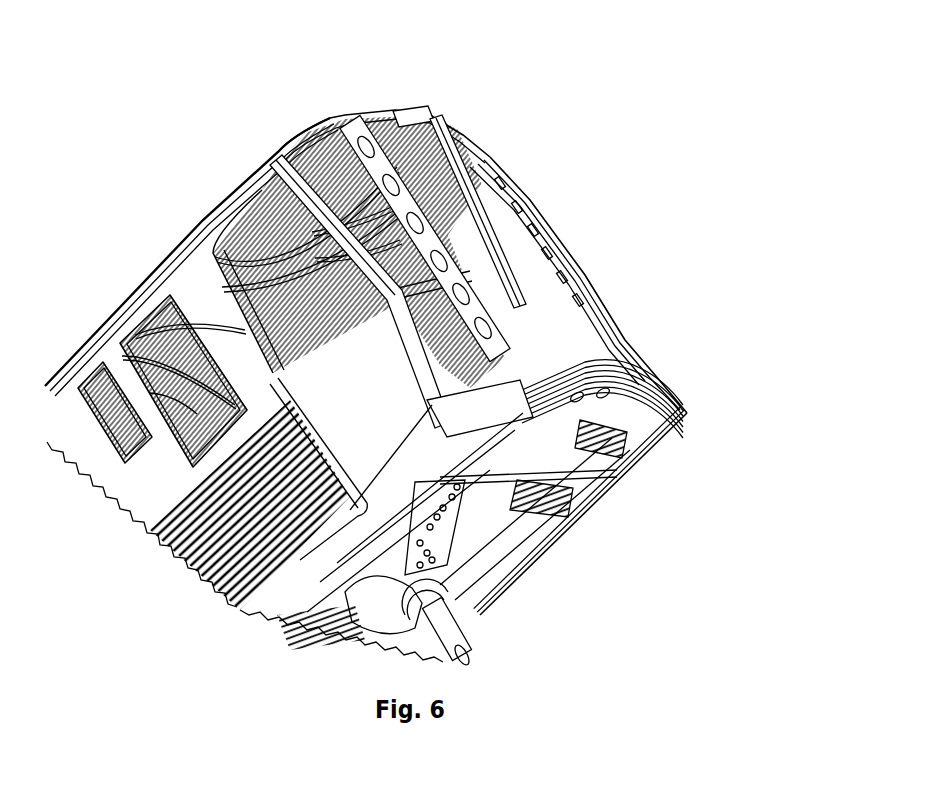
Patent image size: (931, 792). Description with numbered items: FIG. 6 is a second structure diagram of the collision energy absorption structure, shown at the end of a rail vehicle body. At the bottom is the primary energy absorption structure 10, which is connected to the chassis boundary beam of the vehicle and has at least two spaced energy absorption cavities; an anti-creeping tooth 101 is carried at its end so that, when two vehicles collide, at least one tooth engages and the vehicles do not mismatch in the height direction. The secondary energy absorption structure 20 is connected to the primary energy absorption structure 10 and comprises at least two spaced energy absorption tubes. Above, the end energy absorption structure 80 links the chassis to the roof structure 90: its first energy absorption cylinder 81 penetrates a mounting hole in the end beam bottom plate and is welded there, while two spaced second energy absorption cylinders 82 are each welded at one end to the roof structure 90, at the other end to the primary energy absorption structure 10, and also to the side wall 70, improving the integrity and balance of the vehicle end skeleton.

The primary energy absorption structure 10 is at (687, 413).
The secondary energy absorption structure 20 is at (630, 473).
The side wall 70 is at (333, 377).
The end energy absorption structure 80 is at (456, 203).
The first energy absorption cylinder 81 is at (470, 273).
The second energy absorption cylinder 82 is at (617, 345).
The roof structure 90 is at (226, 187).
The anti-creeping tooth 101 is at (637, 363).